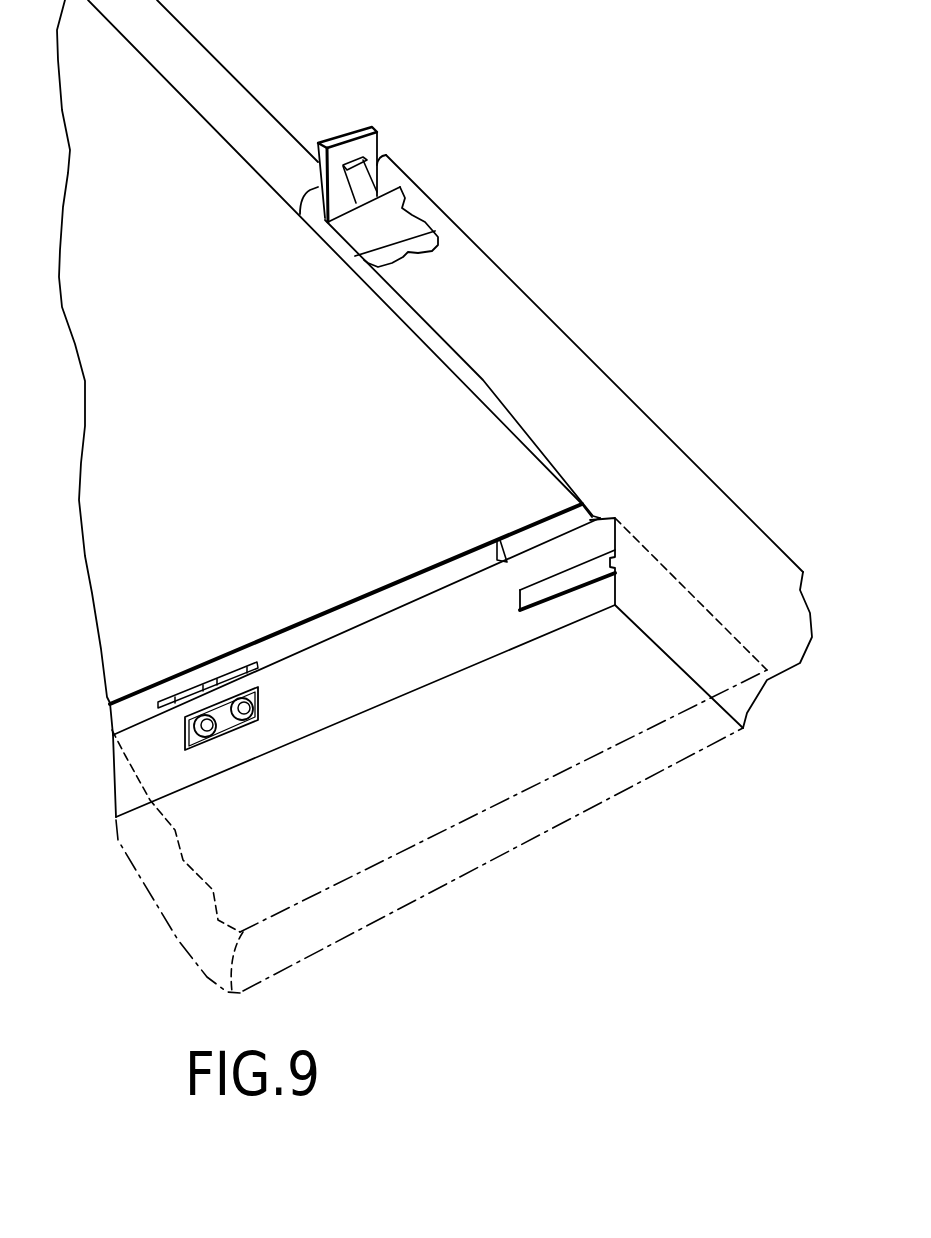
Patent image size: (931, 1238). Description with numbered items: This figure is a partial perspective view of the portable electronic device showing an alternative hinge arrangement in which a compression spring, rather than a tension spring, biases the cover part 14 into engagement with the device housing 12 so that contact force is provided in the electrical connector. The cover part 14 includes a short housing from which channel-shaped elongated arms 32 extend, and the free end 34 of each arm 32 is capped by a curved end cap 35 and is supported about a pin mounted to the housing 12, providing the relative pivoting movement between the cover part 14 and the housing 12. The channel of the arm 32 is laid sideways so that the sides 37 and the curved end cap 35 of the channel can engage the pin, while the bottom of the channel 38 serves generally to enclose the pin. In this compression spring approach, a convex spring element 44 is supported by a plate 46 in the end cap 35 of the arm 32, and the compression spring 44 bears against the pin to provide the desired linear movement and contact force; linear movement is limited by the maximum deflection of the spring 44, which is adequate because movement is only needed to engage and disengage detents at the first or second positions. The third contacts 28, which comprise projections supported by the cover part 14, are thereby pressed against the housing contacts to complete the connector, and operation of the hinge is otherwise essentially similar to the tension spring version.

The housing 12 is at (258, 511).
The cover part 14 is at (603, 522).
The third contact 28 is at (260, 708).
The elongated arm 32 is at (767, 530).
The free end 34 is at (446, 186).
The curved end cap 35 is at (358, 123).
The side of the channel 37 is at (580, 473).
The bottom of the channel 38 is at (517, 280).
The convex spring element 44 is at (363, 187).
The plate 46 is at (333, 139).